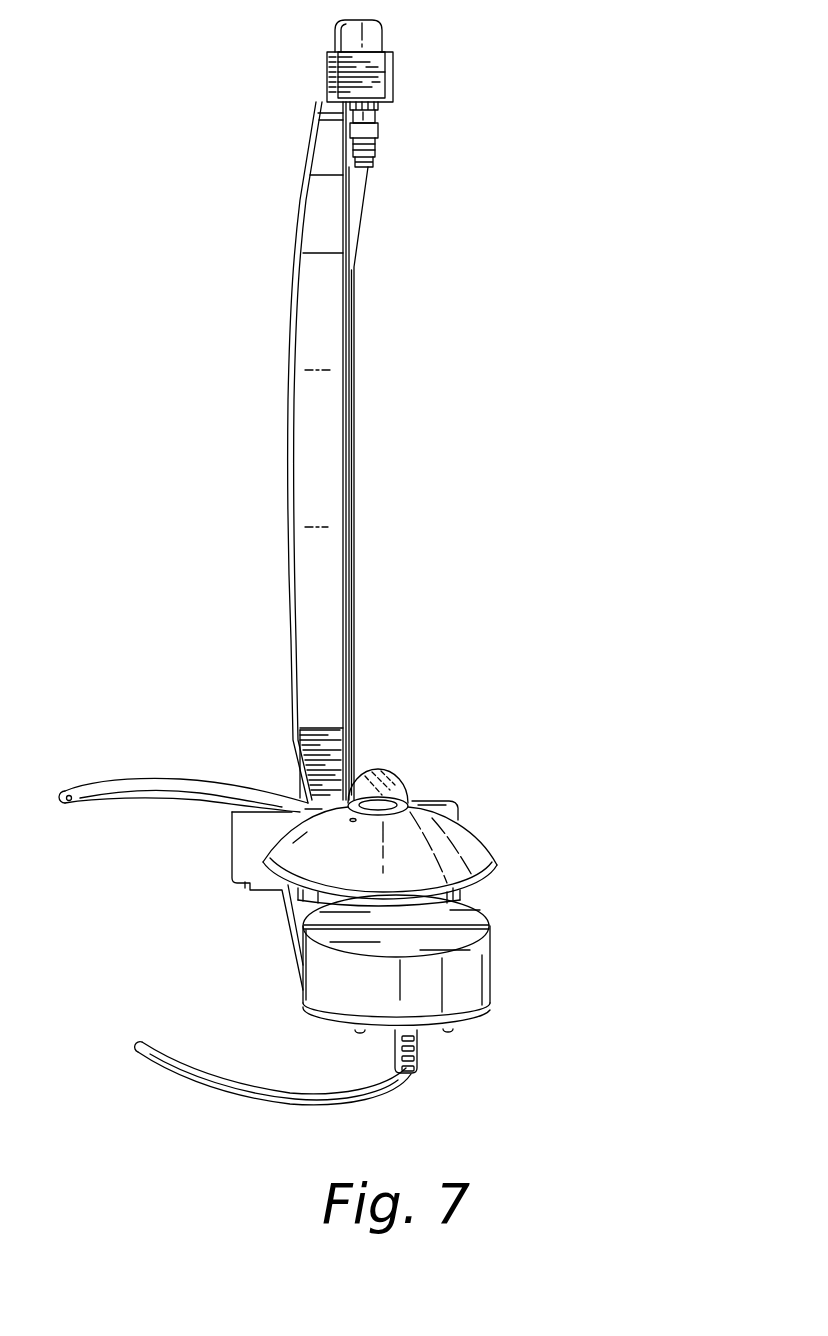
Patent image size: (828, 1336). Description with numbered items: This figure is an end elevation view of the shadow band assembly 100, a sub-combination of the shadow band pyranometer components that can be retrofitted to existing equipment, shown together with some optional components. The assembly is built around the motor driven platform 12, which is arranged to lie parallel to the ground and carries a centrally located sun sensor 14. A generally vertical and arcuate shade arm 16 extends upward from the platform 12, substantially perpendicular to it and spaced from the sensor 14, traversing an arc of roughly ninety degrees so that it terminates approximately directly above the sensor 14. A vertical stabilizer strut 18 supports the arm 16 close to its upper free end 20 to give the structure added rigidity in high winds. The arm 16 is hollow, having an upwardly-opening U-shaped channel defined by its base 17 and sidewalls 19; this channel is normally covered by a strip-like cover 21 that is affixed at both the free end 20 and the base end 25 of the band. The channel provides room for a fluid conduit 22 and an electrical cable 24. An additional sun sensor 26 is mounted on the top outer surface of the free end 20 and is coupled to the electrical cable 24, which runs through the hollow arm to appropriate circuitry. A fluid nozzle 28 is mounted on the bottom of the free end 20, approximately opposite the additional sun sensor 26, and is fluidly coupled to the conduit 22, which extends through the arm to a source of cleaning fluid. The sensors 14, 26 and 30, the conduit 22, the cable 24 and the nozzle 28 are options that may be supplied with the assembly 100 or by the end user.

The shadow band assembly 100 is at (478, 535).
The motor driven platform 12 is at (253, 830).
The sun sensor 14 is at (382, 783).
The shade arm 16 is at (280, 435).
The base 17 is at (385, 103).
The vertical stabilizer strut 18 is at (349, 438).
The sidewalls 19 is at (330, 98).
The free end 20 is at (408, 91).
The cover 21 is at (347, 77).
The fluid conduit 22 is at (127, 787).
The electrical cable 24 is at (175, 798).
The base end 25 is at (295, 735).
The additional sun sensor 26 is at (384, 33).
The fluid nozzle 28 is at (377, 143).
The sensor 30 is at (450, 918).